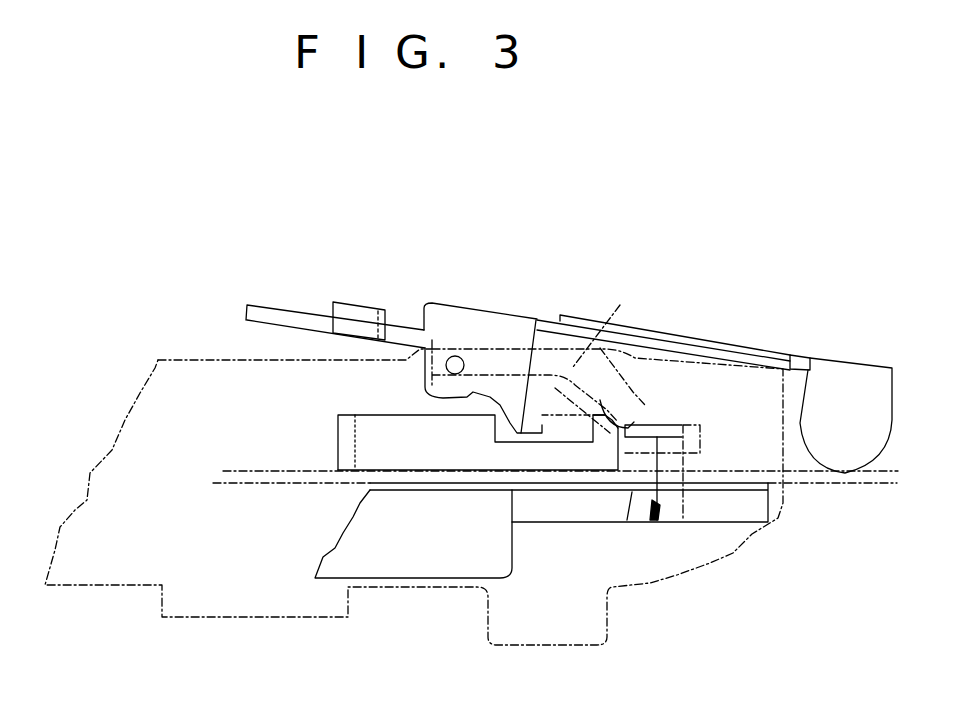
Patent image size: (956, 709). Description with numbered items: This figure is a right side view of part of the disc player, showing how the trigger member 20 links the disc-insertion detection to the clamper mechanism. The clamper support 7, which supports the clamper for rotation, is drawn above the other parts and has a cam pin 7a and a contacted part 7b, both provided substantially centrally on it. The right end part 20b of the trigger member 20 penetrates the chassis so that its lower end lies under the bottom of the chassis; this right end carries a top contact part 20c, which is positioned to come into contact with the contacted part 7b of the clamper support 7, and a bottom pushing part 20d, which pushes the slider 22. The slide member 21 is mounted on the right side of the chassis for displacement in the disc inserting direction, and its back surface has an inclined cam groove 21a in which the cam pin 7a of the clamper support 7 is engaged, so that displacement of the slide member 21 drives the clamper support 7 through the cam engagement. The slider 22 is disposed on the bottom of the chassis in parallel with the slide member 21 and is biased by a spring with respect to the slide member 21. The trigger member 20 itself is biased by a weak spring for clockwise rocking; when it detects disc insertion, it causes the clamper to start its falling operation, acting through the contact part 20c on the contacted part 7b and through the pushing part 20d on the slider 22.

The clamper support 7 is at (543, 319).
The cam pin 7a is at (453, 355).
The contacted part 7b is at (543, 425).
The trigger member 20 is at (363, 413).
The right end part 20b is at (683, 455).
The top contact part 20c is at (617, 423).
The bottom pushing part 20d is at (658, 520).
The slide member 21 is at (204, 357).
The inclined cam groove 21a is at (620, 305).
The slider 22 is at (557, 510).